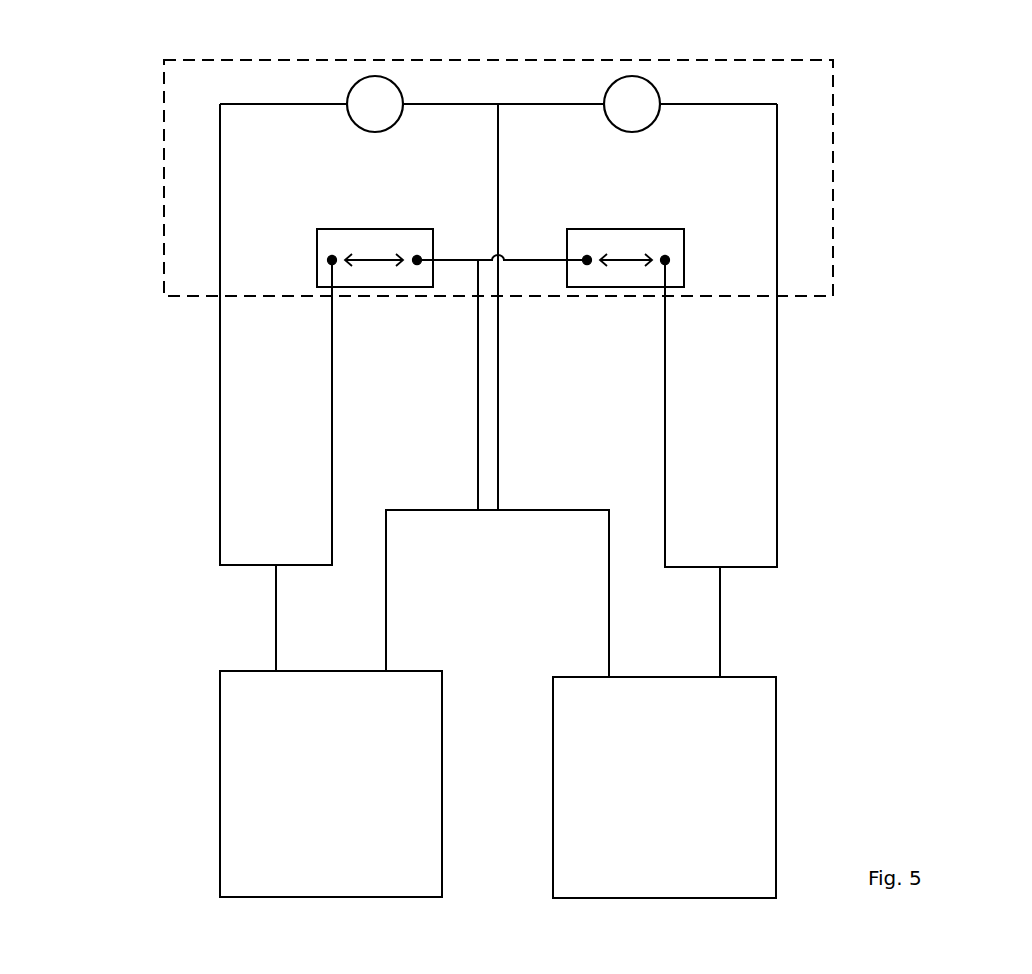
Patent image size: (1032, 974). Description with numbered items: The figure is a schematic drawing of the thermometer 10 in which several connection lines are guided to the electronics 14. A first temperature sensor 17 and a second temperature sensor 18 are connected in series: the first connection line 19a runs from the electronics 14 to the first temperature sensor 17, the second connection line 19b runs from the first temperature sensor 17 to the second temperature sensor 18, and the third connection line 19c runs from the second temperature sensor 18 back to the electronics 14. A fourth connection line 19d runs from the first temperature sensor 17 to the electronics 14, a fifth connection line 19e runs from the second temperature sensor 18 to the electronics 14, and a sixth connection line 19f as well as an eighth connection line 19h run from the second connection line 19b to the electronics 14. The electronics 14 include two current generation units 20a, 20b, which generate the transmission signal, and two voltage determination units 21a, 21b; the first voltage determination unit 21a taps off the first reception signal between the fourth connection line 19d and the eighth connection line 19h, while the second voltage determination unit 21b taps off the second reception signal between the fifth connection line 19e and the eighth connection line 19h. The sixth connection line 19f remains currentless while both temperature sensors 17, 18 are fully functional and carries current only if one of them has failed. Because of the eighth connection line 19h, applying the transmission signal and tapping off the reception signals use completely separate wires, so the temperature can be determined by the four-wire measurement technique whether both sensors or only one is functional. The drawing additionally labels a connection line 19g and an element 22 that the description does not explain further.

The measuring system 10 is at (32, 8).
The electronics 14 is at (163, 205).
The first temperature sensor 17 is at (331, 784).
The second temperature sensor 18 is at (664, 787).
The first connection line 19a is at (224, 334).
The second connection line 19b is at (497, 593).
The third connection line 19c is at (774, 335).
The fourth connection line 19d is at (304, 465).
The fifth connection line 19e is at (692, 468).
The sixth connection line 19f is at (523, 307).
The line 19g is at (498, 92).
The eighth connection line 19h is at (457, 385).
The current generation unit 20a is at (375, 80).
The current generation unit 20b is at (632, 80).
The first voltage determination unit 21a is at (315, 260).
The second voltage determination unit 21b is at (567, 243).
The current path 22 is at (385, 175).